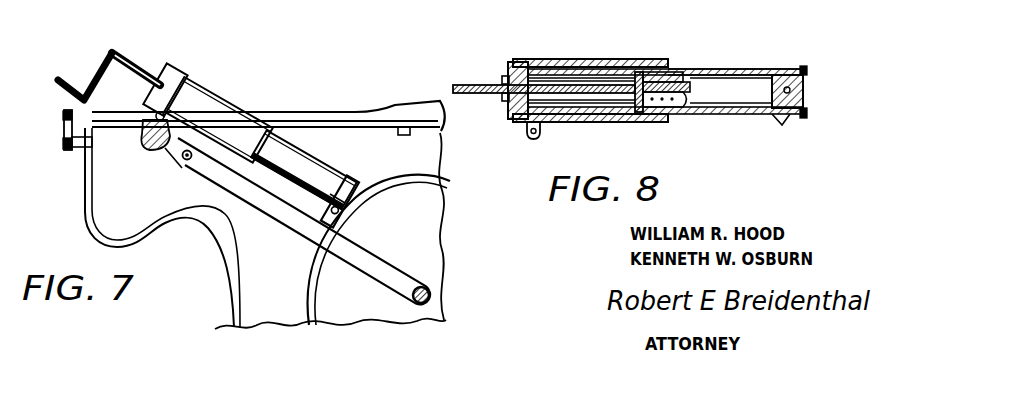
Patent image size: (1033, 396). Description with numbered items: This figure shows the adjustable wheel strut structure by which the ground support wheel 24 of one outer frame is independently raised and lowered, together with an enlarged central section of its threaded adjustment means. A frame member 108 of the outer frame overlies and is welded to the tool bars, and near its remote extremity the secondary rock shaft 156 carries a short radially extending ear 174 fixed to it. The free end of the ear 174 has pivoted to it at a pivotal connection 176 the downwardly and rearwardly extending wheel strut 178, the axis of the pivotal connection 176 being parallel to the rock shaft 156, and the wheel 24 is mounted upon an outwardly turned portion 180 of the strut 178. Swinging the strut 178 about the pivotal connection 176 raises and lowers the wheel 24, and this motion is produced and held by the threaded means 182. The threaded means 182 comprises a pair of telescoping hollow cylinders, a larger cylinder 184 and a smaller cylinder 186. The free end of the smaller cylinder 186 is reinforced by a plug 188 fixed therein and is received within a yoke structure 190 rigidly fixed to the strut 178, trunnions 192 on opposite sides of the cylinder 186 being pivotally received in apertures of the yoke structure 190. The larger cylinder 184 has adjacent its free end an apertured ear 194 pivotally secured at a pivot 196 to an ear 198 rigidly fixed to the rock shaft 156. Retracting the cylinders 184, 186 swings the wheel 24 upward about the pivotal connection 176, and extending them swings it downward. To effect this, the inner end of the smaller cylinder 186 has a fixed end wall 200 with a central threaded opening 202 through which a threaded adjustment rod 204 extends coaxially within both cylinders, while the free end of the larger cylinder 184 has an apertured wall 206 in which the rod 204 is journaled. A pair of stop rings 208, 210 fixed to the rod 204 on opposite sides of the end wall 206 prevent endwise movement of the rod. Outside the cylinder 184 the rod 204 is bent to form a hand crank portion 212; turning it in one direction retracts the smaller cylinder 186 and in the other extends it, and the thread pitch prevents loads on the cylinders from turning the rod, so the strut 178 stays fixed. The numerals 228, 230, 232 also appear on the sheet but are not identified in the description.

In FIG. 7, the ground support wheel 24 is at (418, 160).
In FIG. 7, the frame member 108 is at (288, 112).
In FIG. 7, the secondary rock shaft 156 is at (163, 150).
In FIG. 7, the ear 174 is at (171, 156).
In FIG. 7, the pivotal connection 176 is at (189, 161).
In FIG. 7, the wheel strut 178 is at (300, 222).
In FIG. 7, the outwardly turned portion 180 is at (430, 290).
In FIG. 8, the threaded means 182 is at (603, 60).
In FIG. 8, the larger cylinder 184 is at (568, 62).
In FIG. 7, the smaller cylinder 186 is at (327, 172).
In FIG. 8, the smaller cylinder 186 is at (742, 53).
In FIG. 8, the plug 188 is at (800, 92).
In FIG. 7, the yoke structure 190 is at (345, 228).
In FIG. 8, the yoke structure 190 is at (783, 120).
In FIG. 7, the trunnions 192 is at (360, 182).
In FIG. 8, the apertured ear 194 is at (540, 132).
In FIG. 7, the pivot 196 is at (192, 70).
In FIG. 7, the ear 198 is at (137, 148).
In FIG. 8, the fixed end wall 200 is at (653, 64).
In FIG. 8, the threaded opening 202 is at (690, 68).
In FIG. 7, the threaded adjustment rod 204 is at (127, 62).
In FIG. 8, the threaded adjustment rod 204 is at (681, 97).
In FIG. 8, the apertured wall 206 is at (507, 63).
In FIG. 8, the stop ring 208 is at (507, 107).
In FIG. 8, the stop ring 210 is at (537, 103).
In FIG. 7, the hand crank portion 212 is at (70, 82).
In FIG. 7, the lever 228 is at (234, 3).
In FIG. 7, the link 230 is at (359, 0).
In FIG. 7, the handle 232 is at (107, 12).